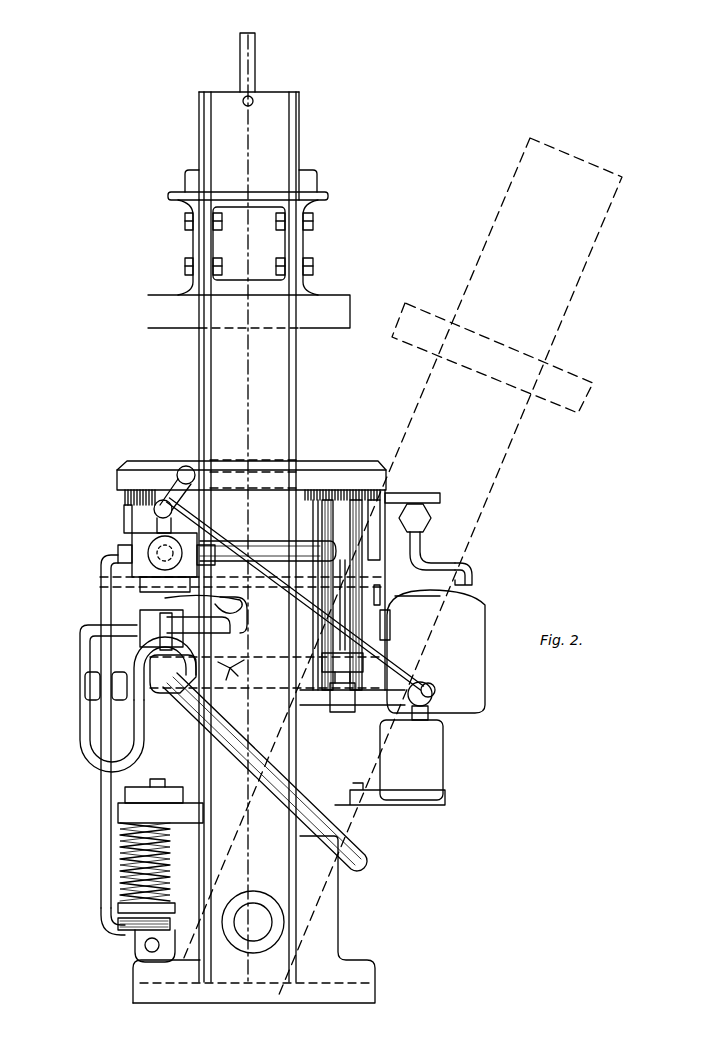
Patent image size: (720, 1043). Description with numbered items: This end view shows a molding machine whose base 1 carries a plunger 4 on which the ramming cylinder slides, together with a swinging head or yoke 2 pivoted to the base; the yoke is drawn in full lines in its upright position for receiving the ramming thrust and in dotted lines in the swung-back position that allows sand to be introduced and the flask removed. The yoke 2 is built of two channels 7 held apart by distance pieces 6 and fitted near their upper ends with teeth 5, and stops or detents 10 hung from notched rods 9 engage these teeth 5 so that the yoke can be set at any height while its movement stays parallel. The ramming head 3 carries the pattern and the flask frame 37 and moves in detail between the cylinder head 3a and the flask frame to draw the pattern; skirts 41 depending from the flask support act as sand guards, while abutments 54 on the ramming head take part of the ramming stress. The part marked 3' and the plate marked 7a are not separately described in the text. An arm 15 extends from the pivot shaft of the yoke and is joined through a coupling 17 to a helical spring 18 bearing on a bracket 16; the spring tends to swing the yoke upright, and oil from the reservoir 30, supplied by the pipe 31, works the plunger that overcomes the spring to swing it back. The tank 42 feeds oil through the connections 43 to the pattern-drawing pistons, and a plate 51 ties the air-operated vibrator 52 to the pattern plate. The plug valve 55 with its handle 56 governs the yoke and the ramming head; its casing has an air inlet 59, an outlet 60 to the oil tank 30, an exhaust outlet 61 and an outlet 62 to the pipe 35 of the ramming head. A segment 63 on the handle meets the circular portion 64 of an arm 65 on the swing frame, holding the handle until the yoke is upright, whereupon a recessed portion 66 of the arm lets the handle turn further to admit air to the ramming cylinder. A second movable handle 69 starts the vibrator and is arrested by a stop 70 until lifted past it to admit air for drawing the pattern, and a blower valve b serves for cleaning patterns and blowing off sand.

The base 1 is at (340, 929).
The swinging head 2 is at (208, 246).
The ramming head 3 is at (311, 595).
The cylinder head 3a is at (330, 470).
The rod 3' is at (346, 605).
The plunger 4 is at (248, 34).
The teeth 5 is at (300, 143).
The distance pieces 6 is at (270, 241).
The channels 7 is at (198, 151).
The plate 7a is at (160, 801).
The notched rods 9 is at (256, 79).
The stops or detents 10 is at (318, 178).
The arm 15 is at (146, 952).
The bracket 16 is at (108, 812).
The coupling 17 is at (125, 930).
The helical spring 18 is at (128, 868).
The reservoir 30 is at (390, 762).
The pipe 31 is at (265, 640).
The pipe 35 is at (235, 730).
The flask frame 37 is at (153, 462).
The skirts 41 is at (353, 590).
The tank 42 is at (436, 651).
The connections 43 is at (470, 569).
The plate 51 is at (414, 493).
The vibrator 52 is at (425, 518).
The abutments 54 is at (118, 548).
The plug valve 55 is at (205, 545).
The handle 56 is at (186, 465).
The air inlet 59 is at (190, 560).
The outlet to the oil tank 60 is at (125, 530).
The outlet to the exhaust 61 is at (105, 560).
The outlet to the pipe of the ramming head 62 is at (300, 545).
The segment 63 is at (154, 522).
The circular portion 64 is at (143, 583).
The arm 65 is at (140, 590).
The recessed portion 66 is at (362, 440).
The movable handle 69 is at (214, 601).
The stop 70 is at (161, 630).
The blower valve b is at (231, 670).